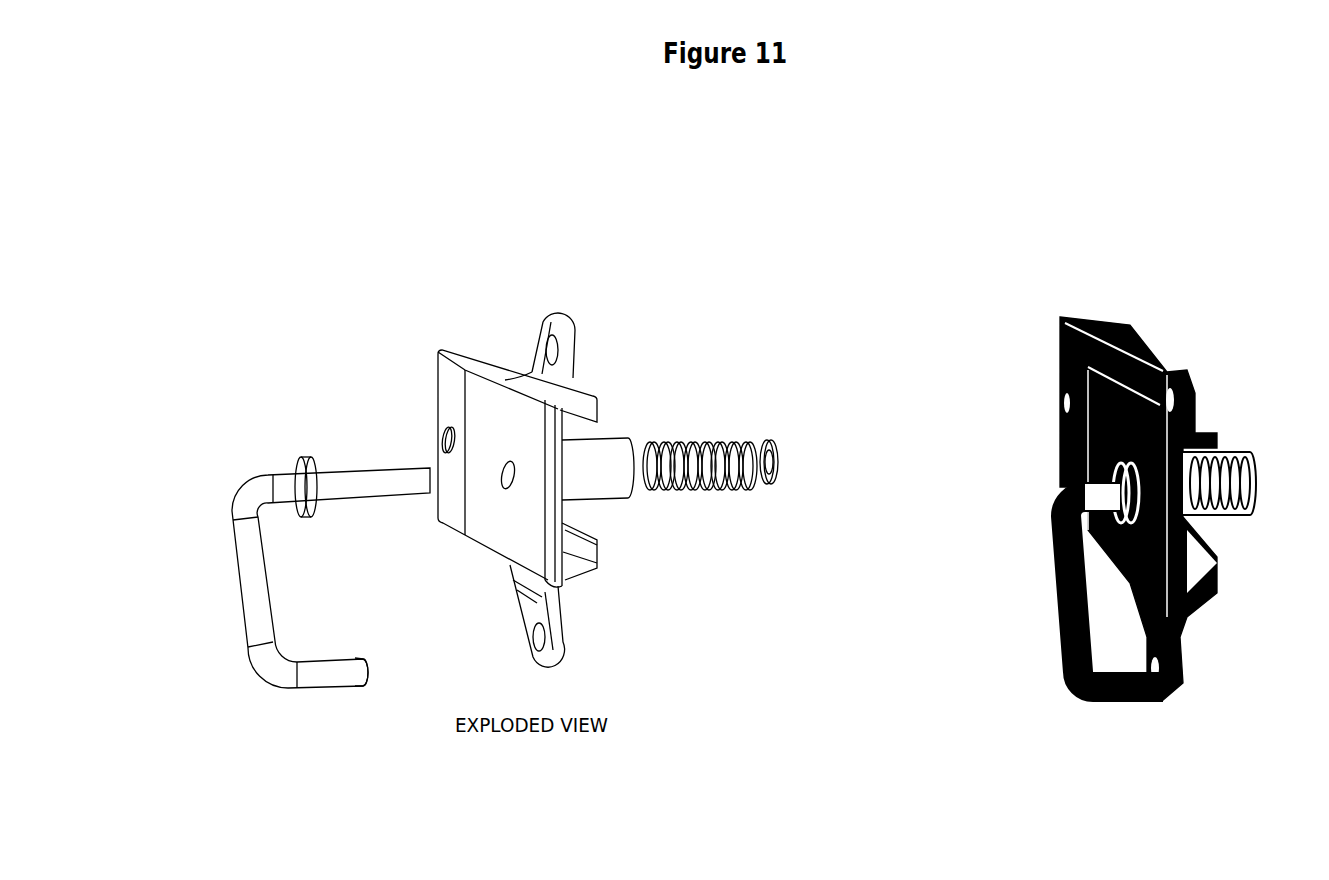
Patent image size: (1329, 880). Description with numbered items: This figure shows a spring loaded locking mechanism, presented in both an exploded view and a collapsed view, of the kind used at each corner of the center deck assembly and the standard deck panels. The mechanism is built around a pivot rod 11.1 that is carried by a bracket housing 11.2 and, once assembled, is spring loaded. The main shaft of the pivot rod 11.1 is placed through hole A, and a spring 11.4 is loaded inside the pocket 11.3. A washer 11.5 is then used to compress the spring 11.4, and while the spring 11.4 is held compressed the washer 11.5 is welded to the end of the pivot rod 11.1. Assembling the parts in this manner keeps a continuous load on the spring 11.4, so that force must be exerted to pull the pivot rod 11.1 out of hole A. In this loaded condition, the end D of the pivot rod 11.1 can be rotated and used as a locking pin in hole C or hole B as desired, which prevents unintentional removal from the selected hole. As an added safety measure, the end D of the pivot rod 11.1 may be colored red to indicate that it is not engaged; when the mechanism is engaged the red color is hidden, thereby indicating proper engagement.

The pivot rod 11.1 is at (343, 477).
The bracket housing 11.2 is at (485, 422).
The pocket 11.3 is at (612, 462).
The spring 11.4 is at (732, 460).
The washer 11.5 is at (772, 438).
The hole A is at (505, 492).
The hole B is at (557, 333).
The hole C is at (533, 652).
The end D is at (362, 690).